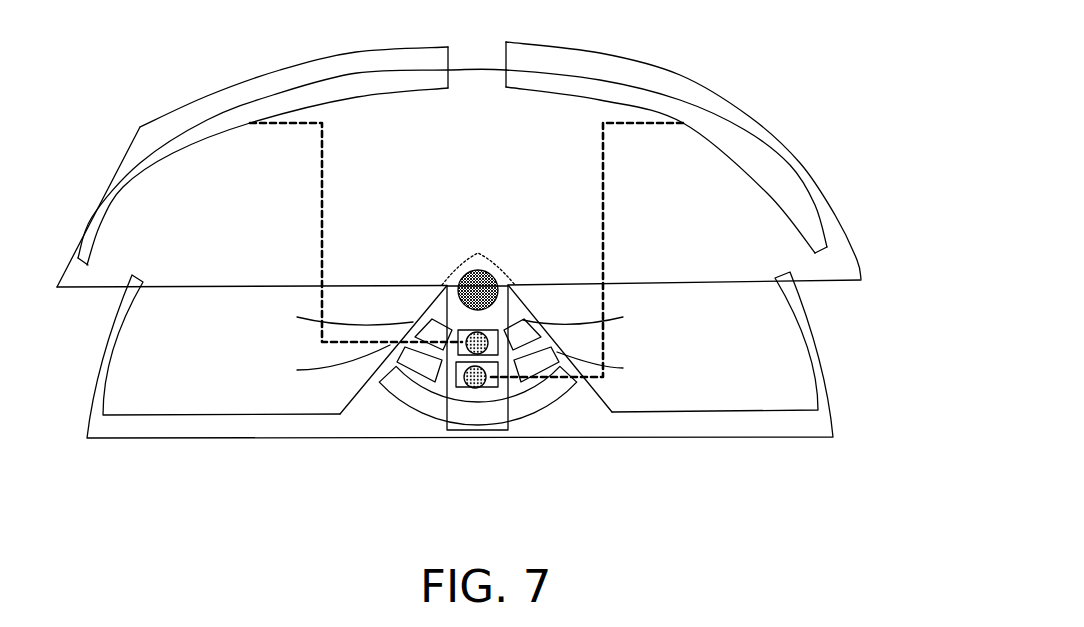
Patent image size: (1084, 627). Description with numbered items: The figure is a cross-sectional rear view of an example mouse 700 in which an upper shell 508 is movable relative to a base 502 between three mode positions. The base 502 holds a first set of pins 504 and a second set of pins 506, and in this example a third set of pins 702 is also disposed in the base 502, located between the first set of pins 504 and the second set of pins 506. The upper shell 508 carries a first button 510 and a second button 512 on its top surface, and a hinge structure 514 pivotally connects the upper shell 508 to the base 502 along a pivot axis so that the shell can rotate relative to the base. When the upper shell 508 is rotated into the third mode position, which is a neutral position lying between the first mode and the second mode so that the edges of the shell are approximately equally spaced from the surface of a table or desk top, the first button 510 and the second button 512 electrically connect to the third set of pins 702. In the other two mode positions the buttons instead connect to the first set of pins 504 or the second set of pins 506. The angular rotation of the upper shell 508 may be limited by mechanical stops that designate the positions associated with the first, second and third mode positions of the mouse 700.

The base 502 is at (833, 408).
The first set of pins 504 is at (297, 308).
The second set of pins 506 is at (623, 308).
The upper shell 508 is at (843, 224).
The first button 510 is at (153, 120).
The second button 512 is at (683, 75).
The hinge structure 514 is at (556, 298).
The mouse 700 is at (718, 493).
The third set of pins 702 is at (468, 385).